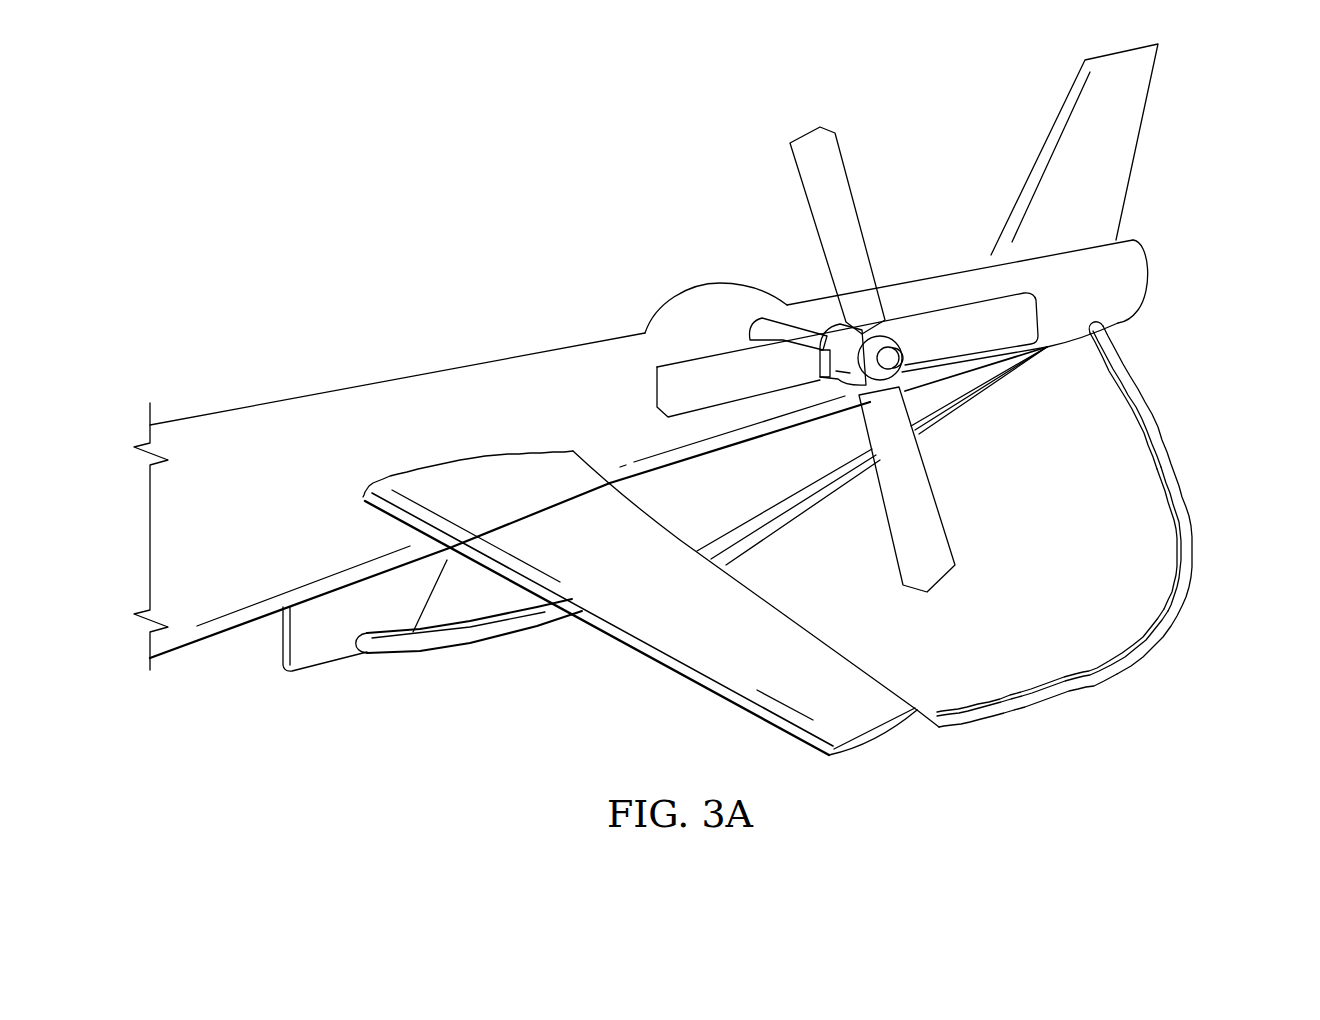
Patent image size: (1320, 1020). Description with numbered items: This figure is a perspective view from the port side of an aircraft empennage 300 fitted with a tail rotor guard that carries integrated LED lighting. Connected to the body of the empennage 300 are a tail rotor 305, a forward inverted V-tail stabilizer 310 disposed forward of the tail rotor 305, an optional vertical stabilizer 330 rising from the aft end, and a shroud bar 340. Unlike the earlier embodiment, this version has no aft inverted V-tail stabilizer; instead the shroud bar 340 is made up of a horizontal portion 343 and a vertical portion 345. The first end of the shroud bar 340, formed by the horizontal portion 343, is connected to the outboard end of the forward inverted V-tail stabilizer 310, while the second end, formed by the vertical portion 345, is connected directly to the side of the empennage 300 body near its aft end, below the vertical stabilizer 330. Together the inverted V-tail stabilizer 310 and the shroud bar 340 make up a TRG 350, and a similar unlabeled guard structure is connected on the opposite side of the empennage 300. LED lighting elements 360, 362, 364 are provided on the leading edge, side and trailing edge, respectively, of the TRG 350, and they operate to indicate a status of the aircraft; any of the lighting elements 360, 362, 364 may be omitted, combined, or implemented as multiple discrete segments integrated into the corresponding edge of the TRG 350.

The aircraft empennage 300 is at (403, 333).
The tail rotor 305 is at (888, 271).
The forward inverted V-tail stabilizer 310 is at (767, 682).
The vertical stabilizer 330 is at (1124, 136).
The shroud bar 340 is at (1191, 639).
The horizontal portion 343 is at (1029, 690).
The vertical portion 345 is at (1143, 468).
The TRG 350 is at (618, 683).
The LED lighting element 360 is at (596, 630).
The LED lighting element 362 is at (1088, 694).
The LED lighting element 364 is at (1163, 438).